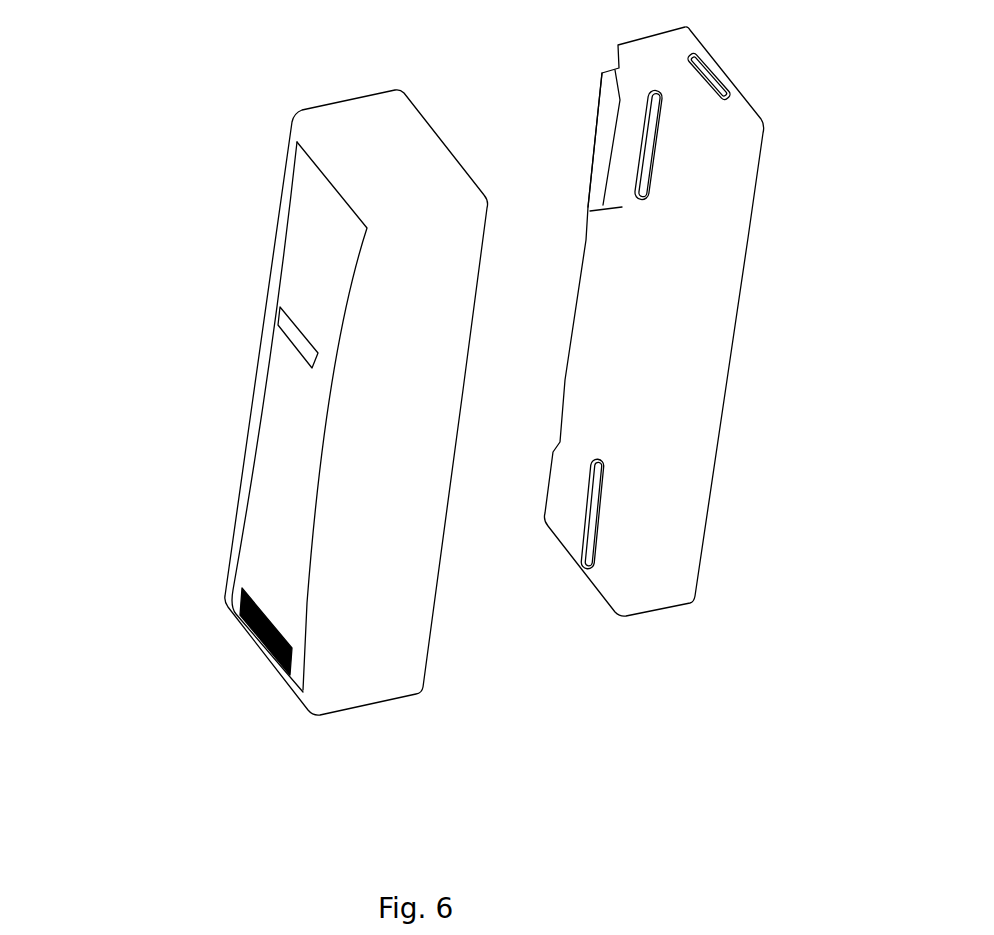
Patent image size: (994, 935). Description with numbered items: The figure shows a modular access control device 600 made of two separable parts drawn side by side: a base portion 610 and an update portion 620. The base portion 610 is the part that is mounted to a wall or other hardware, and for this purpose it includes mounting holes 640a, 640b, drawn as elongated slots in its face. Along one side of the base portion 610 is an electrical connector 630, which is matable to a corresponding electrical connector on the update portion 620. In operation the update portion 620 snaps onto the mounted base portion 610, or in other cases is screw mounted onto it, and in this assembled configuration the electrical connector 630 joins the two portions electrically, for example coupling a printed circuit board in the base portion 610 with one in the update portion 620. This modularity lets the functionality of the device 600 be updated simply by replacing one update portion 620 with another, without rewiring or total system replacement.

The modular access control device 600 is at (123, 74).
The base portion 610 is at (731, 353).
The update portion 620 is at (253, 440).
The electrical connector 630 is at (597, 175).
The mounting hole 640a is at (603, 488).
The mounting hole 640b is at (662, 137).